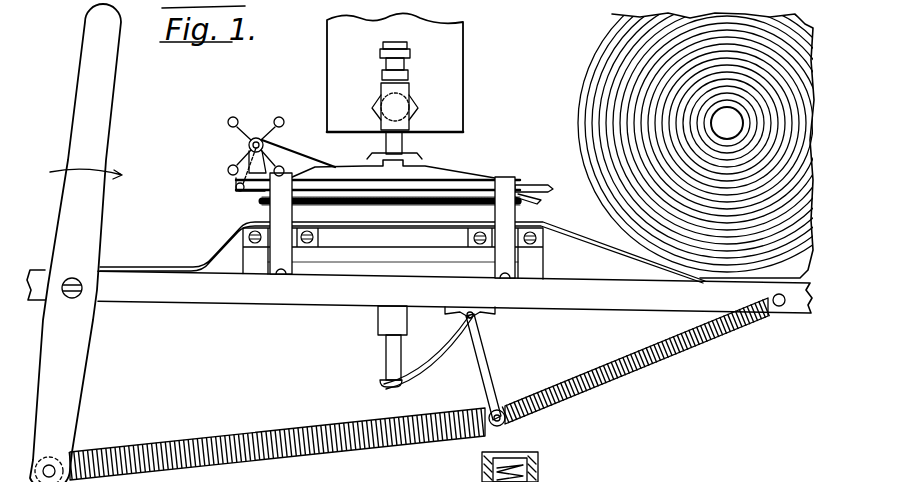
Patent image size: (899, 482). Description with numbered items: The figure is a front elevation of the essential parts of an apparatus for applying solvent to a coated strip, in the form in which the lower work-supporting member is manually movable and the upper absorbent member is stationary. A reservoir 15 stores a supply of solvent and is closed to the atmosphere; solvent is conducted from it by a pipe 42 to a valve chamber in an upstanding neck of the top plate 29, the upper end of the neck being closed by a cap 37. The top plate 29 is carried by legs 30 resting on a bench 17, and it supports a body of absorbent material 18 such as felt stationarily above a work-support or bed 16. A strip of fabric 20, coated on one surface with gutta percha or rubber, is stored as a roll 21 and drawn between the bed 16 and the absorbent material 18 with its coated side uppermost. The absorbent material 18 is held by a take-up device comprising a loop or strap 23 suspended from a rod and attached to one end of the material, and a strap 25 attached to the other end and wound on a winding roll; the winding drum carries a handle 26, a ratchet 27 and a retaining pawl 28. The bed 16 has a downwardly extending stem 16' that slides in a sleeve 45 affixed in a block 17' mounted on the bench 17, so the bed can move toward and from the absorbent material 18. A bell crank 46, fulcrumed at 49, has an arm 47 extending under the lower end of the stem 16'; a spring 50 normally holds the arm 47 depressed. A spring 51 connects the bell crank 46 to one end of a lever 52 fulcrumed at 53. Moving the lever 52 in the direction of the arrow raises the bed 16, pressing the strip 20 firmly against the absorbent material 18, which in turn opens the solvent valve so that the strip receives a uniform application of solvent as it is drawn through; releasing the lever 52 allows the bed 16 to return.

The reservoir 15 is at (467, 62).
The work-support or bed 16 is at (393, 253).
The stem 16' is at (367, 361).
The bench 17 is at (419, 303).
The block 17' is at (393, 263).
The body of absorbent material 18 is at (262, 204).
The strip of fabric 20 is at (222, 250).
The roll 21 is at (600, 50).
The loop or strap 23 is at (535, 206).
The strap 25 is at (238, 188).
The handle 26 is at (229, 167).
The ratchet 27 is at (248, 142).
The retaining pawl 28 is at (293, 153).
The top plate 29 is at (473, 170).
The legs 30 is at (292, 264).
The cap 37 is at (536, 460).
The pipe 42 is at (405, 100).
The sleeve 45 is at (378, 322).
The bell crank 46 is at (490, 370).
The arm 47 is at (442, 362).
The fulcrum 49 is at (478, 318).
The spring 50 is at (657, 362).
The spring 51 is at (266, 432).
The lever 52 is at (80, 390).
The fulcrum 53 is at (74, 278).